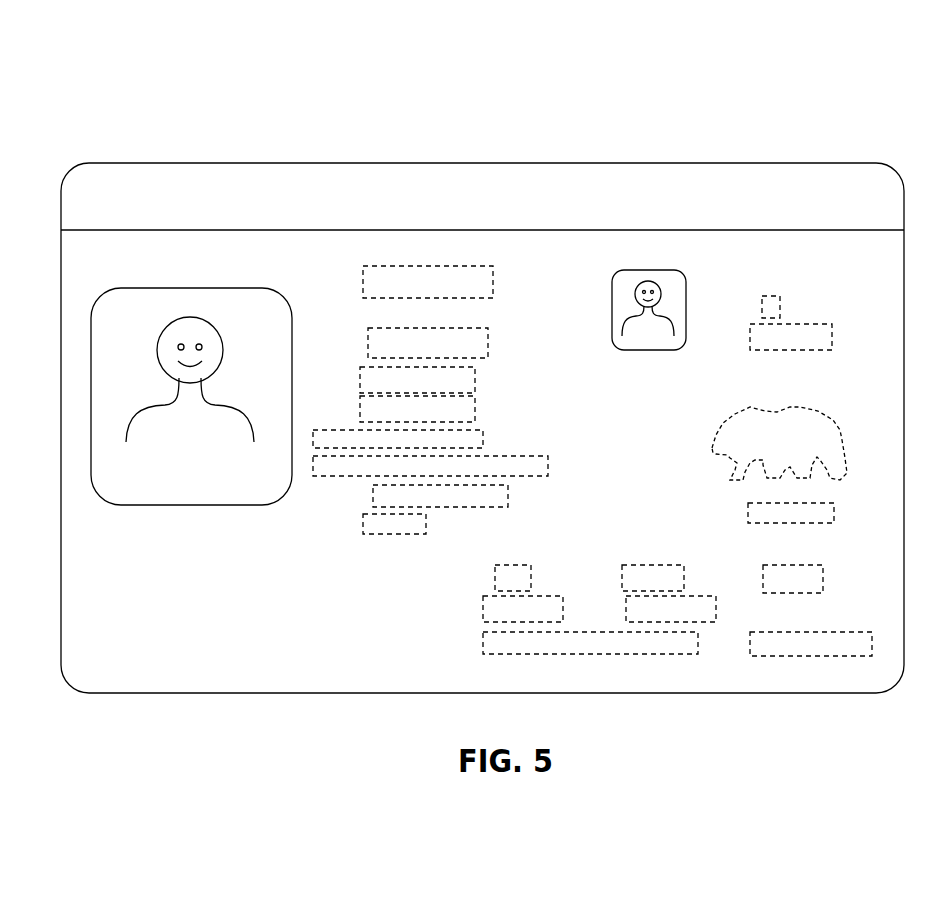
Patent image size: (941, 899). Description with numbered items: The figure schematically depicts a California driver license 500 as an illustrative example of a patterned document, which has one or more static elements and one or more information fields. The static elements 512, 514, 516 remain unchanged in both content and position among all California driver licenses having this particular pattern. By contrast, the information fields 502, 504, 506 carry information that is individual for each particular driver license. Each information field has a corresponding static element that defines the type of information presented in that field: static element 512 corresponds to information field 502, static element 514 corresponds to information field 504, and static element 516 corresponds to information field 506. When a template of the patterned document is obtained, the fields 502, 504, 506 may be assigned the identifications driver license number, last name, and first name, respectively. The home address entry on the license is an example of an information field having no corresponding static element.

The California driver license 500 is at (112, 78).
The driver license number information field 502 is at (498, 272).
The last name information field 504 is at (481, 378).
The first name information field 506 is at (486, 405).
The static element 512 is at (313, 279).
The static element 514 is at (314, 378).
The static element 516 is at (316, 407).